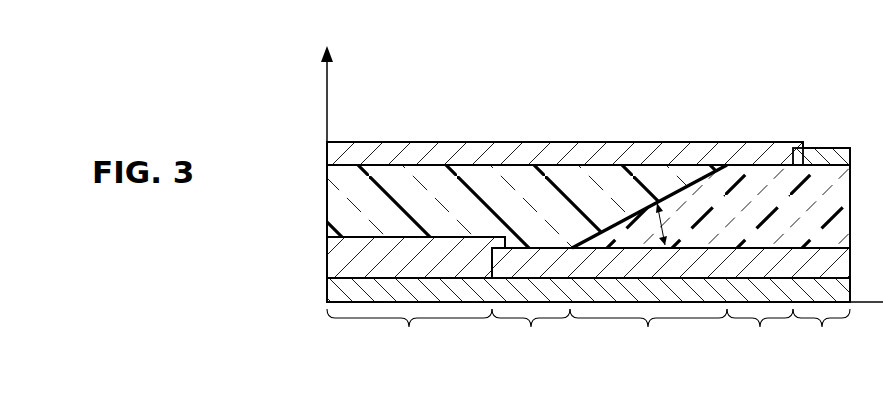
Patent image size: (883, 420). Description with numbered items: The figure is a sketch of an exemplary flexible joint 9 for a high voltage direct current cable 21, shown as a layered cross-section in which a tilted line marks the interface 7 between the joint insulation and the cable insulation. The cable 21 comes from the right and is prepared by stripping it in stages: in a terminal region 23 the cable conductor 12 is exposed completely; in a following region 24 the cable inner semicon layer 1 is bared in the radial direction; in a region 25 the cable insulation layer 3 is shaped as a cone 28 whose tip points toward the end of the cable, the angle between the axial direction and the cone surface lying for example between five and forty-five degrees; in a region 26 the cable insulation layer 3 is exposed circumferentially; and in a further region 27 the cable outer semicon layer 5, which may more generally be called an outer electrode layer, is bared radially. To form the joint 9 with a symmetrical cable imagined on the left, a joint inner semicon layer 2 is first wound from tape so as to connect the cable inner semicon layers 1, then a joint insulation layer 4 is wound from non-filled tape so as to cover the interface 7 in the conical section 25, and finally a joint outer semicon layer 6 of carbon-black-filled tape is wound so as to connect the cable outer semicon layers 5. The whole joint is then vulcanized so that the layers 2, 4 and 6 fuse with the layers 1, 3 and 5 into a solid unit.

The cable inner semicon layer 1 is at (671, 263).
The joint inner semicon layer 2 is at (416, 257).
The cable insulation layer 3 is at (711, 206).
The joint insulation layer 4 is at (527, 206).
The cable outer semicon layer 5 is at (832, 157).
The joint outer semicon layer 6 is at (388, 153).
The interface 7 is at (608, 222).
The joint 9 is at (458, 131).
The cable conductor 12 is at (700, 291).
The high voltage direct current cable 21 is at (718, 124).
The cone 28 is at (685, 182).
The terminal region 23 is at (409, 338).
The region where the cable inner semicon layer is bared 24 is at (531, 338).
The conical section 25 is at (648, 338).
The region where the cable insulation layer is bared circumferentially 26 is at (760, 338).
The region where the cable outer semicon layer is bared 27 is at (821, 338).